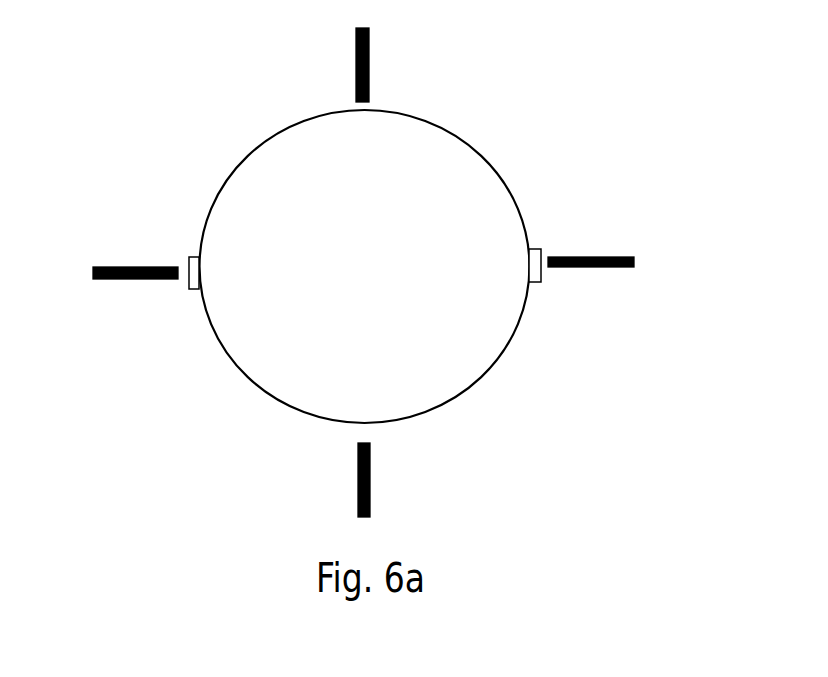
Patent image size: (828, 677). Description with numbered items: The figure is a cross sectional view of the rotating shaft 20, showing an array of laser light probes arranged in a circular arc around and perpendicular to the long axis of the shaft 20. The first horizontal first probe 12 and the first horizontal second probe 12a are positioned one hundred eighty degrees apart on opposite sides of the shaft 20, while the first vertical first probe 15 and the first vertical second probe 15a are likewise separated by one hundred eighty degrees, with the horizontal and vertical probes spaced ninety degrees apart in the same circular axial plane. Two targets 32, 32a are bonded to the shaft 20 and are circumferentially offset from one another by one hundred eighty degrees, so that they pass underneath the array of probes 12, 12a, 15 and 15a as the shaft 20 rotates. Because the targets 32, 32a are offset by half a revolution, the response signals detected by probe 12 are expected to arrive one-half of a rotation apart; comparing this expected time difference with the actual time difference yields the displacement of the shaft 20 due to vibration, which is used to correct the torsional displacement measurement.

The shaft 20 is at (221, 179).
The first vertical first probe 15 is at (397, 55).
The first vertical second probe 15a is at (372, 508).
The first horizontal first probe 12 is at (149, 281).
The first horizontal second probe 12a is at (572, 269).
The target 32 is at (189, 291).
The additional target 32a is at (538, 284).